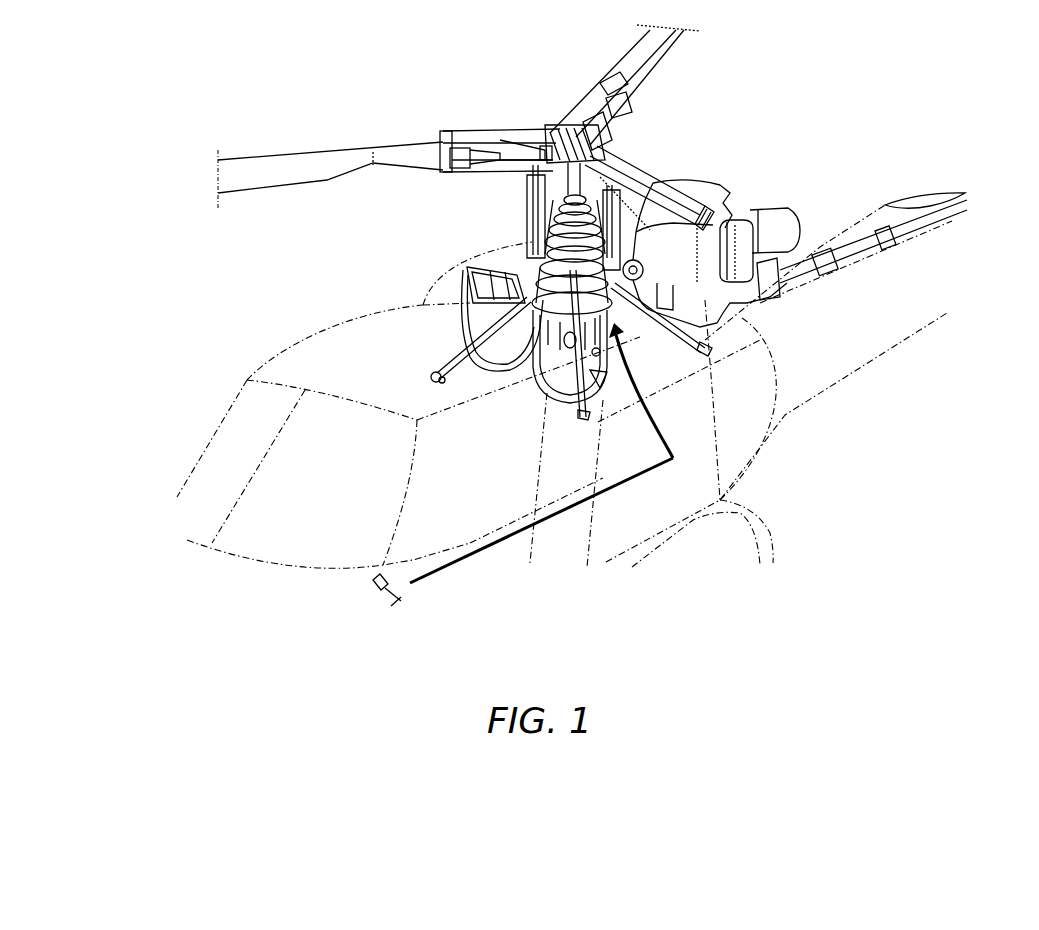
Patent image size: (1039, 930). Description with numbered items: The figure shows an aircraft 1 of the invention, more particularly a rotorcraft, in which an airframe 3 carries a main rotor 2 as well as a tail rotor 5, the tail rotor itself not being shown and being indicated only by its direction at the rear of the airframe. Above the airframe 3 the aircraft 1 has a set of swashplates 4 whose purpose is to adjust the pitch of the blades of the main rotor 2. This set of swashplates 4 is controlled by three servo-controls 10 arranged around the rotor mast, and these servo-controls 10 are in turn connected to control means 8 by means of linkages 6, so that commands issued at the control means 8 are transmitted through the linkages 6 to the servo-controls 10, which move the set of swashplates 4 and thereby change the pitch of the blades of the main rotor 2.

The aircraft 1 is at (246, 138).
The main rotor 2 is at (416, 124).
The airframe 3 is at (776, 426).
The set of swashplates 4 is at (512, 202).
The tail rotor 5 is at (900, 232).
The linkages 6 is at (631, 485).
The control means 8 is at (400, 602).
The servo-controls 10 is at (530, 262).